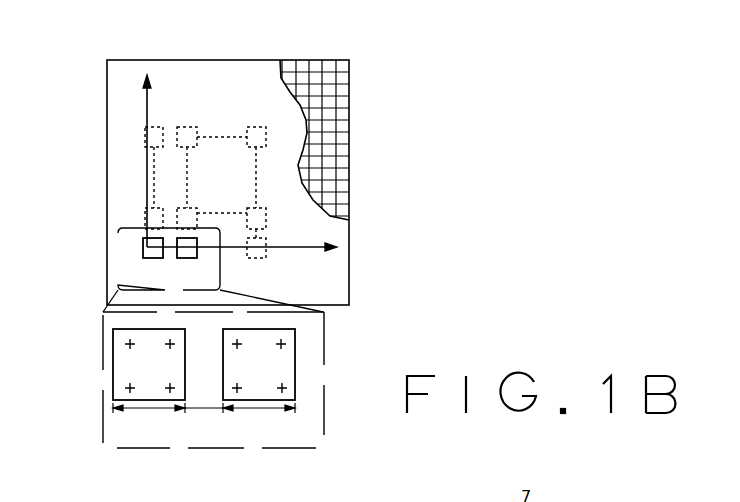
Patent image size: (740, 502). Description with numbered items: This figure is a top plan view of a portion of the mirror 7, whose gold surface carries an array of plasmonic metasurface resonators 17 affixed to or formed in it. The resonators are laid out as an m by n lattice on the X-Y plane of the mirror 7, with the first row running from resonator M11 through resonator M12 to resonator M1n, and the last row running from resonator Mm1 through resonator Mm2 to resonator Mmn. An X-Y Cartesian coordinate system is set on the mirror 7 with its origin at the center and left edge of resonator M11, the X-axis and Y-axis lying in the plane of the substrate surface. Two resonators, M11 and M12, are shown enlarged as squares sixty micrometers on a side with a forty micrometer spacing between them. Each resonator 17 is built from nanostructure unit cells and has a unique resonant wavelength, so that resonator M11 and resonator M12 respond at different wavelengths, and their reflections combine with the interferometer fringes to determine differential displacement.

The mirror 7 is at (226, 162).
The plasmonic metasurface resonator 17 is at (211, 329).
The resonator M11 is at (149, 319).
The resonator M12 is at (236, 319).
The resonator M1n is at (269, 262).
The resonator Mm1 is at (135, 120).
The resonator Mm2 is at (194, 120).
The resonator Mmn is at (269, 120).